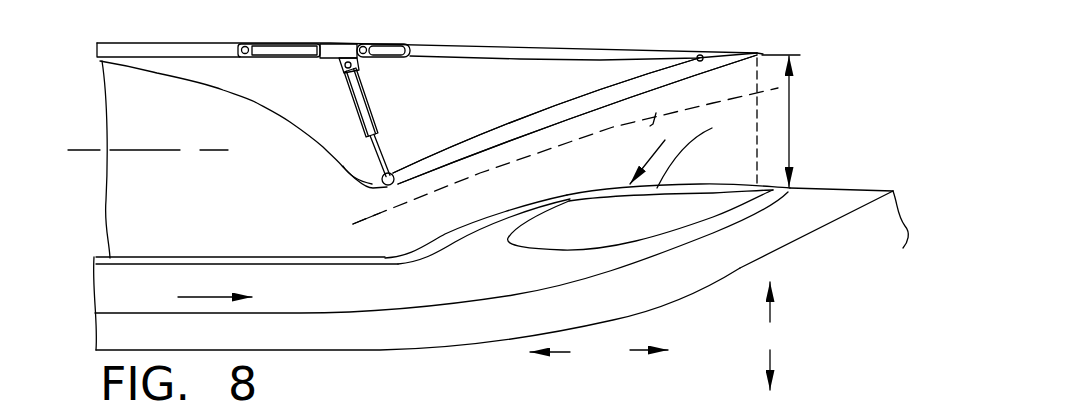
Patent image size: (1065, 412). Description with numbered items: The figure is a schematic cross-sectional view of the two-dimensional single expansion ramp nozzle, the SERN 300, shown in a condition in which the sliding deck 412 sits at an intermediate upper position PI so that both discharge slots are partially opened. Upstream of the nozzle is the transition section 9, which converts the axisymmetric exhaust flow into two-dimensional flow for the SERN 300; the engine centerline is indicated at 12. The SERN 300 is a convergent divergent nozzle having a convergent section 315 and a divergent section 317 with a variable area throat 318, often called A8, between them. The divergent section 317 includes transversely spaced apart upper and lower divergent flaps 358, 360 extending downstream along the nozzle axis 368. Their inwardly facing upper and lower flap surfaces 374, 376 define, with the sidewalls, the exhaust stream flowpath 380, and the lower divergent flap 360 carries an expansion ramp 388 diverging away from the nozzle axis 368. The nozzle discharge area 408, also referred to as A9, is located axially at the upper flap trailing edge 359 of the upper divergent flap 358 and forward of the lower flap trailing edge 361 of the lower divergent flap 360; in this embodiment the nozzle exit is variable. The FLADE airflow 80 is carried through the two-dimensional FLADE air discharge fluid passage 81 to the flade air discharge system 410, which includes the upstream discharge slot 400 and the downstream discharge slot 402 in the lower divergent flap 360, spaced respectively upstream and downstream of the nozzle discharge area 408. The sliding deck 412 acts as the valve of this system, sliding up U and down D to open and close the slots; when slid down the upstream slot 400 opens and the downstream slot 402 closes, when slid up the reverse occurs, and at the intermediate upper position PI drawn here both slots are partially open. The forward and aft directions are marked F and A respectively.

The transition section 9 is at (127, 107).
The engine centerline axis 12 is at (180, 150).
The FLADE airflow 80 is at (203, 297).
The FLADE air discharge fluid passage 81 is at (378, 257).
The SERN 300 is at (583, 45).
The convergent section 315 is at (233, 201).
The divergent section 317 is at (516, 169).
The variable area throat 318 is at (396, 250).
The upper divergent flap 358 is at (590, 94).
The upper flap trailing edge 359 is at (758, 52).
The lower divergent flap 360 is at (512, 218).
The lower flap trailing edge 361 is at (904, 246).
The nozzle axis 368 is at (660, 104).
The upper flap surface 374 is at (498, 133).
The lower flap surface 376 is at (468, 233).
The exhaust stream flowpath 380 is at (598, 134).
The expansion ramp 388 is at (562, 204).
The upstream discharge slot 400 is at (600, 192).
The downstream discharge slot 402 is at (770, 189).
The nozzle discharge area 408 is at (757, 77).
The flade air discharge system 410 is at (391, 318).
The sliding deck 412 is at (662, 188).
The variable area throat designation A8 is at (378, 184).
The nozzle discharge area designation A9 is at (790, 121).
The intermediate upper position PI is at (682, 149).
The forward direction F is at (552, 352).
The aft direction A is at (645, 351).
The up direction U is at (770, 313).
The down direction D is at (773, 357).